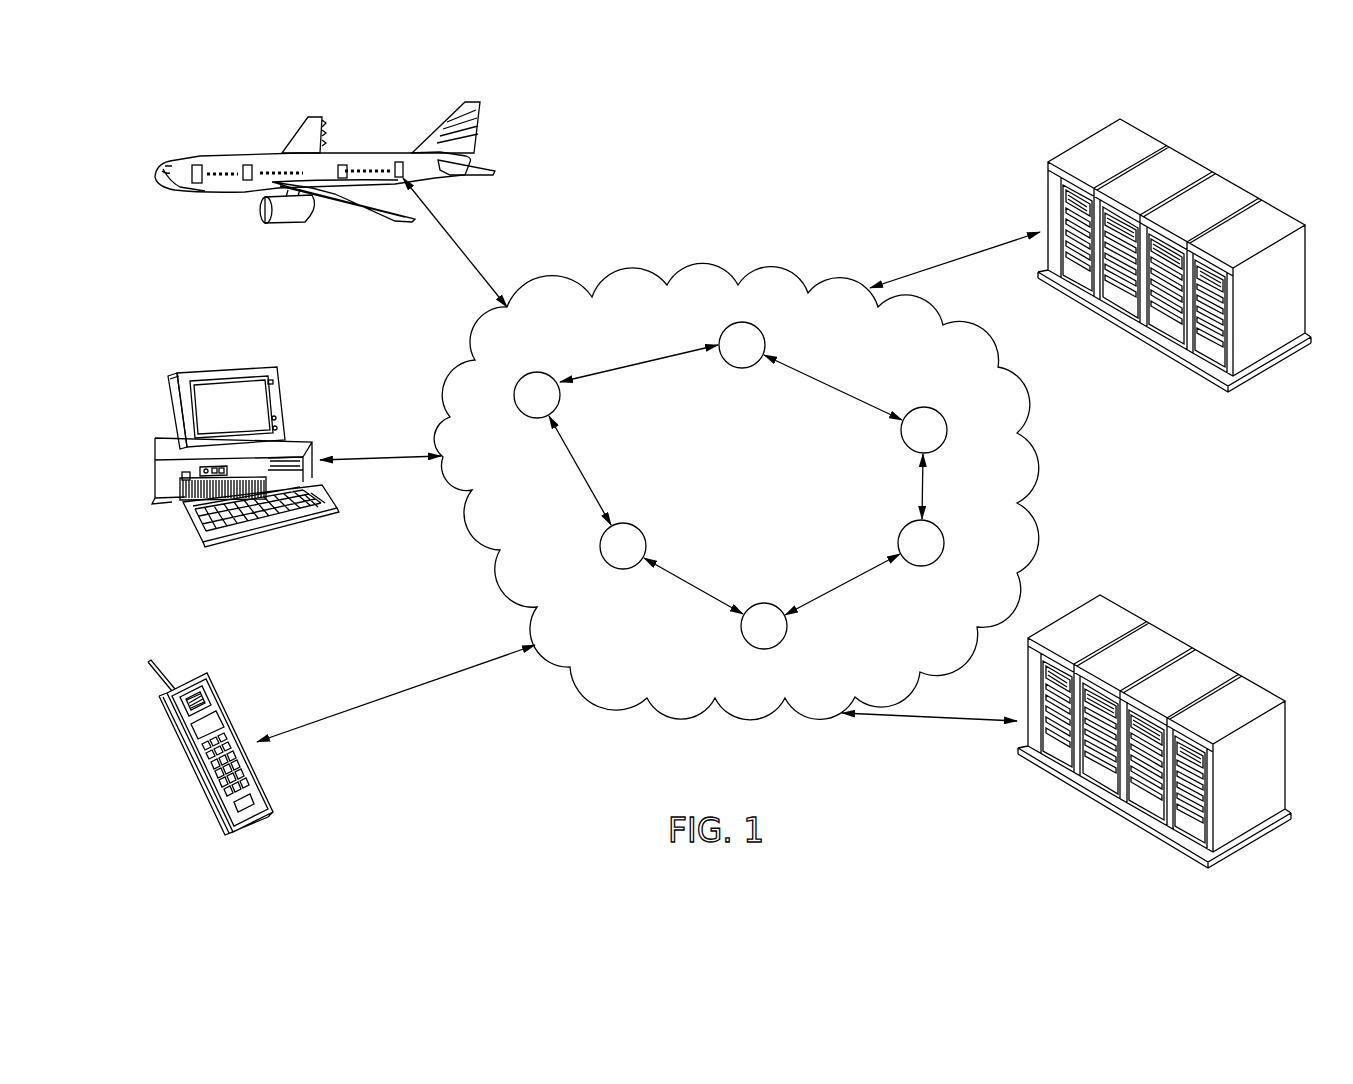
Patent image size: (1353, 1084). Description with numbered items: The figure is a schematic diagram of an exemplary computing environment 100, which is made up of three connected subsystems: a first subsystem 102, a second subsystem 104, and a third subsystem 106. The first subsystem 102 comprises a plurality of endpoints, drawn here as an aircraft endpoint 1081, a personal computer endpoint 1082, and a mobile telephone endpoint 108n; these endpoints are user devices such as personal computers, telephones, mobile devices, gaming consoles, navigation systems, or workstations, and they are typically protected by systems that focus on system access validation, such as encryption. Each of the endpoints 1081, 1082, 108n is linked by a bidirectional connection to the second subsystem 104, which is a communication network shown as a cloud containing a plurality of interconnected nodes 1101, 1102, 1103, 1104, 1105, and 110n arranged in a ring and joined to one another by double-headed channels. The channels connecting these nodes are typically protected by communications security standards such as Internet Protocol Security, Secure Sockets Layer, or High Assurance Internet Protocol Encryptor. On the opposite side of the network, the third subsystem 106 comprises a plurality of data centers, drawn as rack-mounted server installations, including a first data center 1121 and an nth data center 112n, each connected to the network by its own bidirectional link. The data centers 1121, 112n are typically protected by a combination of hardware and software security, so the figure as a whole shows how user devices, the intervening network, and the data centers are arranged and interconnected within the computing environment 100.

The computing environment 100 is at (702, 112).
The first subsystem 102 is at (540, 778).
The second subsystem 104 is at (764, 495).
The third subsystem 106 is at (1223, 500).
The endpoint 1081 is at (358, 153).
The endpoint 1082 is at (300, 437).
The endpoint 108n is at (180, 750).
The node 1101 is at (537, 372).
The node 1102 is at (762, 332).
The node 1103 is at (927, 405).
The node 1104 is at (898, 533).
The node 1105 is at (767, 602).
The node 110n is at (605, 563).
The data center 1121 is at (1197, 167).
The data center 112n is at (1173, 637).